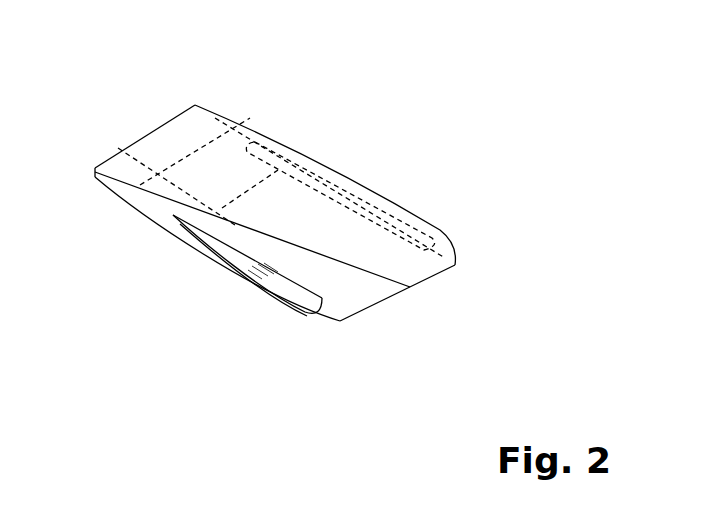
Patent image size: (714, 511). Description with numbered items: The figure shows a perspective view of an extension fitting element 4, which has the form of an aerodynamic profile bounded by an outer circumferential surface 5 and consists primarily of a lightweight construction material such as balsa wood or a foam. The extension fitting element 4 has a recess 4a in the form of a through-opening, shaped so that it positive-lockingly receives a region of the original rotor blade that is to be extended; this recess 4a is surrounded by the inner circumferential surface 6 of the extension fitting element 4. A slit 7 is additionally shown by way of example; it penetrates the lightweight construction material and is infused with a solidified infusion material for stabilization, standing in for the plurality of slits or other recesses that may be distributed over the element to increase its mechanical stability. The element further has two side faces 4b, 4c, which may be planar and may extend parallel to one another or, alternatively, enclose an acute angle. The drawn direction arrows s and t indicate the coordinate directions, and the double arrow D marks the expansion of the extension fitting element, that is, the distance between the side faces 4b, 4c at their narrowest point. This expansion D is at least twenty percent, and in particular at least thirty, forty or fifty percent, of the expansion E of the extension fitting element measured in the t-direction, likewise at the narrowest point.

The extension fitting element 4 is at (142, 138).
The recess 4a is at (235, 287).
The side face 4b is at (188, 238).
The side face 4c is at (443, 227).
The outer circumferential surface 5 is at (390, 283).
The inner circumferential surface 6 is at (227, 248).
The slit 7 is at (150, 192).
The expansion of the extension fitting element D is at (155, 60).
The s-direction s is at (275, 13).
The t-direction t is at (263, 75).
The expansion of the extension fitting element in the t-direction E is at (170, 118).